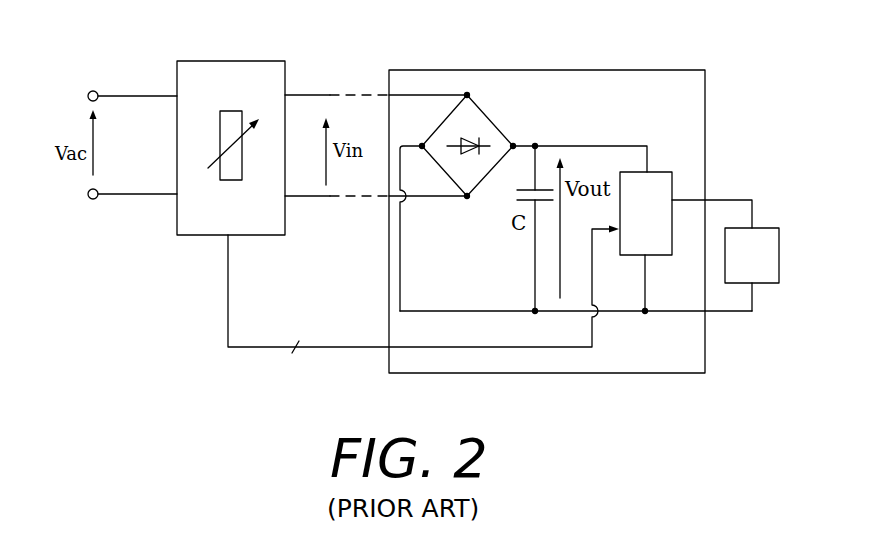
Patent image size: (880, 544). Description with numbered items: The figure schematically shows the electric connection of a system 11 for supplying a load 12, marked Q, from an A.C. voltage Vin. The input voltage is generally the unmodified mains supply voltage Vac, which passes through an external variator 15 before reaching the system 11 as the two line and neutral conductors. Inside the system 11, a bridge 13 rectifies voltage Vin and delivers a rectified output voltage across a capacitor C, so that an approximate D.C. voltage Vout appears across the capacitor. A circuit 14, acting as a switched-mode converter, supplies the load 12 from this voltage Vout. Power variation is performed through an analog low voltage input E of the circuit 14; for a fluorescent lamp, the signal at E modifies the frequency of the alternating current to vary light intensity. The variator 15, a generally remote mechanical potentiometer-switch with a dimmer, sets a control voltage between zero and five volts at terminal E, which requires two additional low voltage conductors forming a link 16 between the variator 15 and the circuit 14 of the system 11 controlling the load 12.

The system 11 is at (583, 70).
The load 12 is at (766, 228).
The bridge 13 is at (493, 108).
The circuit 14 is at (656, 172).
The variator 15 is at (232, 61).
The low voltage link 16 is at (340, 348).